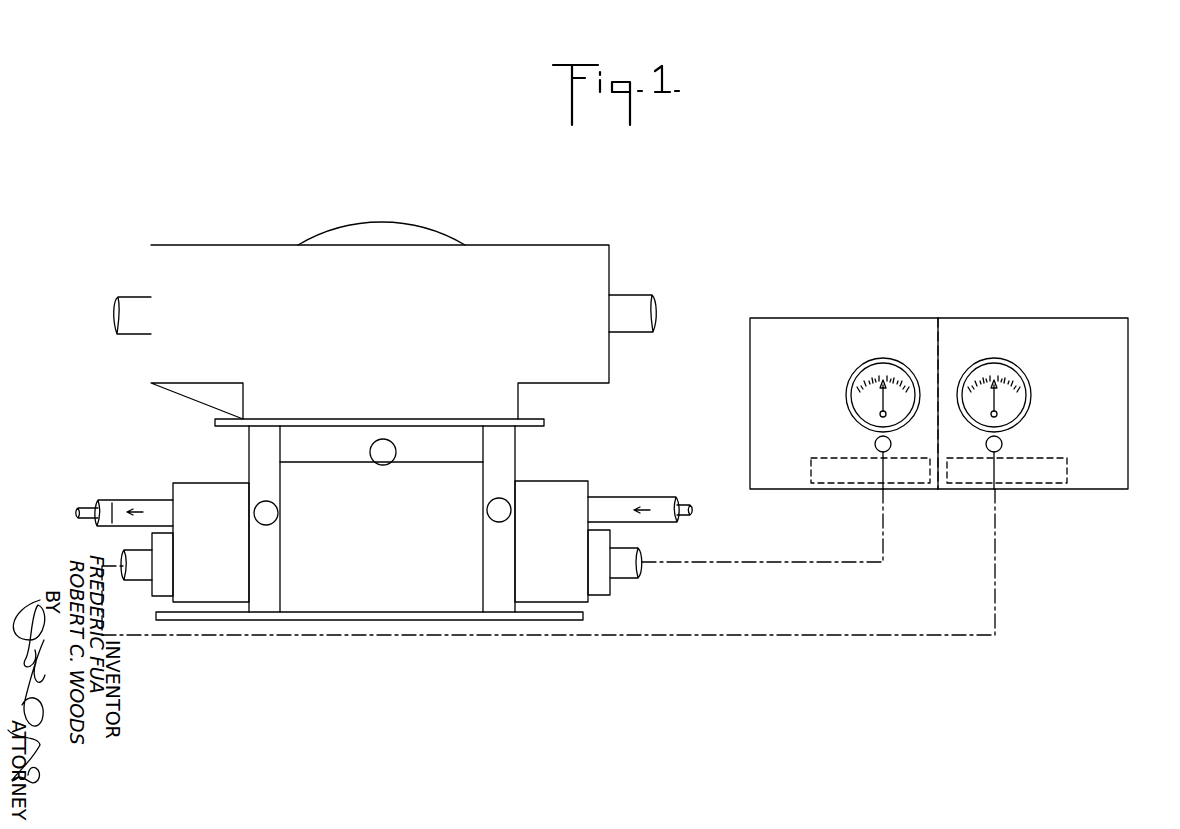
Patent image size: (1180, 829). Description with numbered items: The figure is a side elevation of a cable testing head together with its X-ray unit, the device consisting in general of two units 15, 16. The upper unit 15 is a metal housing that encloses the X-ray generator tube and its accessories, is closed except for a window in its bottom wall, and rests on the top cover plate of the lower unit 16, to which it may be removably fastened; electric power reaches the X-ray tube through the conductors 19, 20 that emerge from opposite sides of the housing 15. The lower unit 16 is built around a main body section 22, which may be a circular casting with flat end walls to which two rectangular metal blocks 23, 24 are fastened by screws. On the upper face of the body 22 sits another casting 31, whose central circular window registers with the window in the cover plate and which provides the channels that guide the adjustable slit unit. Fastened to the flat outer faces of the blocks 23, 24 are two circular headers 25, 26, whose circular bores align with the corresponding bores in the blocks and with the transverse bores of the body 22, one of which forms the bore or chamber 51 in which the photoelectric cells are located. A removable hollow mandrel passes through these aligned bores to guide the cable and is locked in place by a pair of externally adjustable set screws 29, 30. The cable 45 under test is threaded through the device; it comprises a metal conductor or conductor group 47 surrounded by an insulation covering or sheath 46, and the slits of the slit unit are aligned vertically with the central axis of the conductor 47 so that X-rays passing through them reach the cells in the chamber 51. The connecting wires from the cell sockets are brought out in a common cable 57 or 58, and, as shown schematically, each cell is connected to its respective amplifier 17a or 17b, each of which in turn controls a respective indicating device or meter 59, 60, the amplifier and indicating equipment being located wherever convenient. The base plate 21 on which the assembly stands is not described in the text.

The unit 15 is at (564, 241).
The unit 16 is at (527, 468).
The amplifier 17a is at (832, 496).
The amplifier 17b is at (1062, 498).
The conductor 19 is at (131, 297).
The conductor 20 is at (633, 295).
The base plate 21 is at (443, 625).
The main body section 22 is at (370, 600).
The rectangular metal block 23 is at (253, 443).
The rectangular metal block 24 is at (506, 438).
The circular header 25 is at (205, 582).
The circular header 26 is at (552, 585).
The set screw 29 is at (264, 518).
The set screw 30 is at (499, 516).
The casting 31 is at (293, 443).
The cable 45 is at (141, 494).
The insulation covering 46 is at (118, 518).
The metal conductor 47 is at (94, 508).
The transverse circular bore 51 is at (137, 585).
The cable 57 is at (806, 627).
The cable 58 is at (718, 562).
The indicating device or meter 59 is at (880, 358).
The indicating device or meter 60 is at (1006, 360).